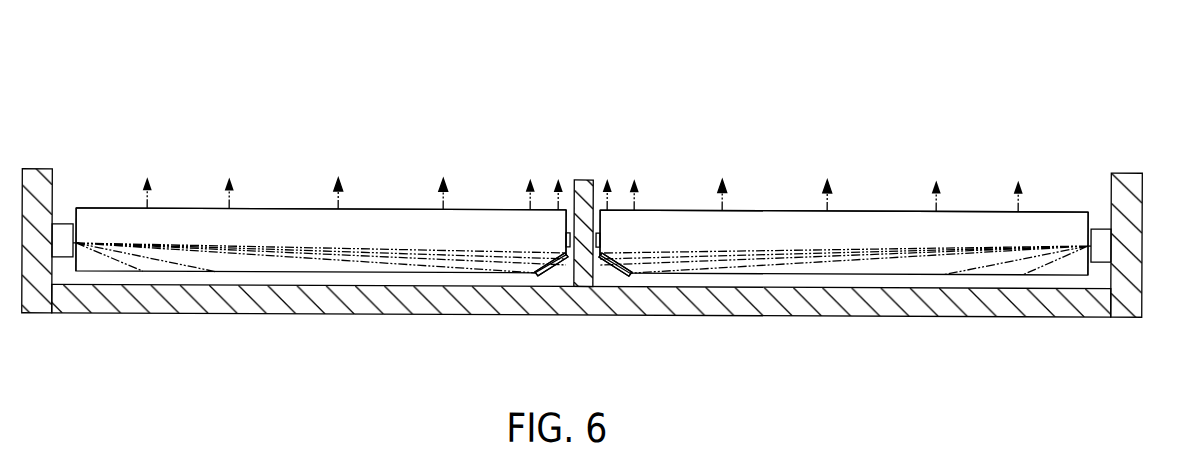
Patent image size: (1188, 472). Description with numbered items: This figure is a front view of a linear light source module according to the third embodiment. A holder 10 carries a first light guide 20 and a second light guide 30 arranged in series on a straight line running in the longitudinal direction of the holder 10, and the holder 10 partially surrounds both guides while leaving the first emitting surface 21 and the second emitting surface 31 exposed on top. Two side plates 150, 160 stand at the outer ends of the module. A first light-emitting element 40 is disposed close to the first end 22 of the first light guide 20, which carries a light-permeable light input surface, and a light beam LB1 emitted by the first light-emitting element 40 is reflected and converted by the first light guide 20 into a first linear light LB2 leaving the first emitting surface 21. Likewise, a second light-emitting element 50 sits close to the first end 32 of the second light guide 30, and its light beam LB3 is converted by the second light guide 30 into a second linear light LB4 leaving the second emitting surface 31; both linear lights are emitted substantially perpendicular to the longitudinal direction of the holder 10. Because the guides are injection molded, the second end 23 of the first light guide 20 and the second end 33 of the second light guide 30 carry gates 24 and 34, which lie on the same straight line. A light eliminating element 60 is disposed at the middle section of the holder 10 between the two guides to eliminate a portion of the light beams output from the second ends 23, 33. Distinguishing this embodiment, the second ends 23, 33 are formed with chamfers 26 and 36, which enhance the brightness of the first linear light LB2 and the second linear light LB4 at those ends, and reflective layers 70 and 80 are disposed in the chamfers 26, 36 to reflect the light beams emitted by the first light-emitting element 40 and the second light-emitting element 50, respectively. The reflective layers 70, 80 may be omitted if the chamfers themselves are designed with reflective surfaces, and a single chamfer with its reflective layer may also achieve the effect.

The holder 10 is at (365, 299).
The first light guide 20 is at (283, 209).
The first emitting surface 21 is at (182, 210).
The first end of the first light guide 22 is at (88, 232).
The second end of the first light guide 23 is at (553, 218).
The gate 24 is at (570, 231).
The chamfer 26 is at (555, 268).
The second light guide 30 is at (858, 207).
The second emitting surface 31 is at (973, 210).
The first end of the second light guide 32 is at (1078, 217).
The second end of the second light guide 33 is at (620, 218).
The gate 34 is at (597, 231).
The chamfer 36 is at (614, 268).
The first light-emitting element 40 is at (63, 237).
The second light-emitting element 50 is at (1102, 241).
The light eliminating element 60 is at (582, 265).
The reflective layer 70 is at (558, 264).
The reflective layer 80 is at (622, 275).
The side plate 150 is at (37, 182).
The side plate 160 is at (1127, 182).
The light beam LB1 is at (398, 254).
The first linear light LB2 is at (346, 177).
The light beam LB3 is at (780, 253).
The second linear light LB4 is at (729, 178).